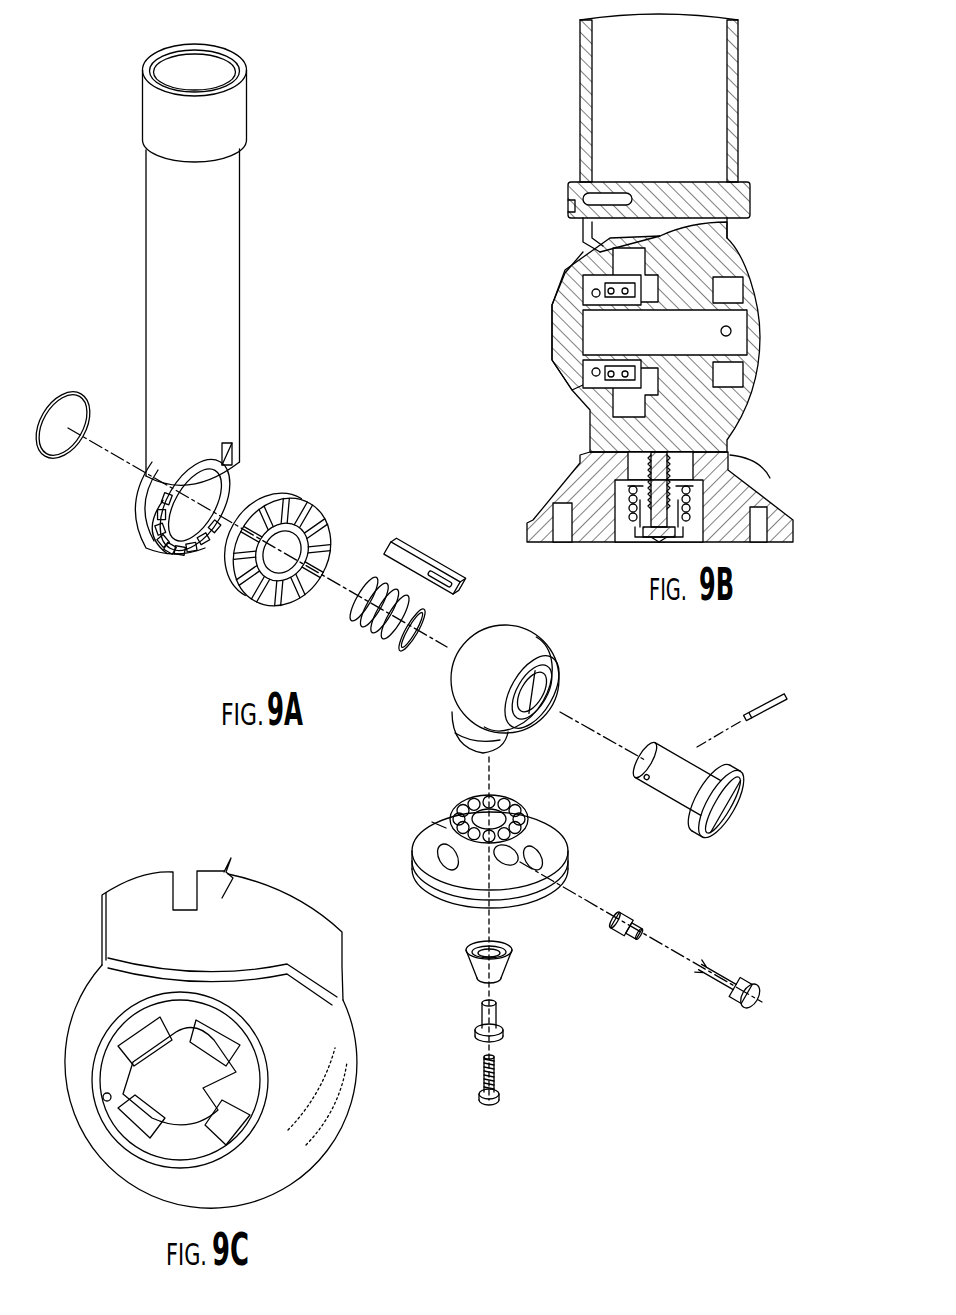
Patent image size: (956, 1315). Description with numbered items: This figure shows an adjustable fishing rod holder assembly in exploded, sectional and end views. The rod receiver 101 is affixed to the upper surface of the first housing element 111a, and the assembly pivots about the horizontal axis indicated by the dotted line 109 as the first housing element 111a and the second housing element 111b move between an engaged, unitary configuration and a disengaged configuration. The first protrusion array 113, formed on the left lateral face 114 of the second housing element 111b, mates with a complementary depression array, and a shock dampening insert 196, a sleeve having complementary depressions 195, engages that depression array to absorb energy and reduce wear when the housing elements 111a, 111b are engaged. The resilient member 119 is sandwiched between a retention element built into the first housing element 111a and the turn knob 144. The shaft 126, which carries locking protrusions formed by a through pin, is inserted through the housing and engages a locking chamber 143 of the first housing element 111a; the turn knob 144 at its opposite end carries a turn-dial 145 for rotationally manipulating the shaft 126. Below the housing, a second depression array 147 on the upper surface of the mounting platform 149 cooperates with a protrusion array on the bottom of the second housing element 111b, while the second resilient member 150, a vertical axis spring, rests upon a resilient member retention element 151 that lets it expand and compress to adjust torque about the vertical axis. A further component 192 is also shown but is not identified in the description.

In FIG. 9A, the rod receiver 101 is at (243, 243).
In FIG. 9B, the rod receiver 101 is at (728, 108).
In FIG. 9A, the horizontal axis dotted line 109 is at (457, 650).
In FIG. 9A, the first housing element 111a is at (140, 503).
In FIG. 9B, the first housing element 111a is at (730, 265).
In FIG. 9C, the first housing element 111a is at (98, 977).
In FIG. 9A, the second housing element 111b is at (540, 645).
In FIG. 9B, the second housing element 111b is at (583, 250).
In FIG. 9A, the first protrusion array 113 is at (187, 555).
In FIG. 9A, the left lateral face 114 is at (170, 553).
In FIG. 9A, the resilient member 119 is at (412, 652).
In FIG. 9B, the resilient member 119 is at (590, 418).
In FIG. 9A, the shaft 126 is at (685, 758).
In FIG. 9B, the shaft 126 is at (728, 345).
In FIG. 9A, the locking chamber 143 is at (225, 478).
In FIG. 9C, the locking chamber 143 is at (153, 1058).
In FIG. 9A, the turn knob 144 is at (745, 793).
In FIG. 9B, the turn knob 144 is at (563, 315).
In FIG. 9A, the turn-dial 145 is at (735, 838).
In FIG. 9A, the second depression array 147 is at (445, 816).
In FIG. 9B, the second depression array 147 is at (713, 413).
In FIG. 9A, the mounting platform 149 is at (565, 845).
In FIG. 9B, the mounting platform 149 is at (733, 457).
In FIG. 9A, the second resilient member 150 is at (512, 958).
In FIG. 9B, the second resilient member 150 is at (700, 497).
In FIG. 9A, the resilient member retention element 151 is at (500, 1017).
In FIG. 9B, the resilient member retention element 151 is at (683, 517).
In FIG. 9A, the key 192 is at (405, 562).
In FIG. 9B, the key 192 is at (575, 183).
In FIG. 9A, the complementary depressions 195 is at (302, 514).
In FIG. 9A, the shock dampening insert 196 is at (332, 530).